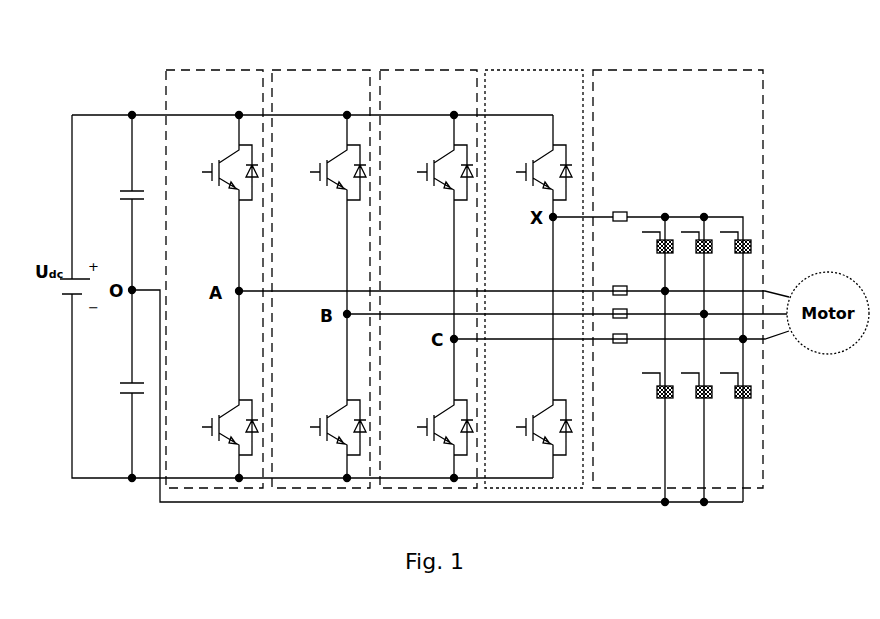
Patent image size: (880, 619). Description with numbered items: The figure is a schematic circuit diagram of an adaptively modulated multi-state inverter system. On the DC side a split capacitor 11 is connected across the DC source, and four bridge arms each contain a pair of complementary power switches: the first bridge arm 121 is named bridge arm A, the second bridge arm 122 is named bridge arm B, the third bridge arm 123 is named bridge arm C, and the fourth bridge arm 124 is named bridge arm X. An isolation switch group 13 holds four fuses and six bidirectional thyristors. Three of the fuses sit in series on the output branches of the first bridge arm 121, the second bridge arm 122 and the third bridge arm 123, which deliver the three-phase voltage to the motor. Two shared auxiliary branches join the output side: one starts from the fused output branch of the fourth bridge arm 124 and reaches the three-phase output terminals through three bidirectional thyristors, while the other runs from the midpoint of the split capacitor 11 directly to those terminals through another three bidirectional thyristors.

The split capacitor 11 is at (125, 196).
The first bridge arm 121 is at (211, 70).
The second bridge arm 122 is at (316, 70).
The third bridge arm 123 is at (421, 70).
The fourth bridge arm 124 is at (528, 70).
The isolation switch group 13 is at (662, 70).